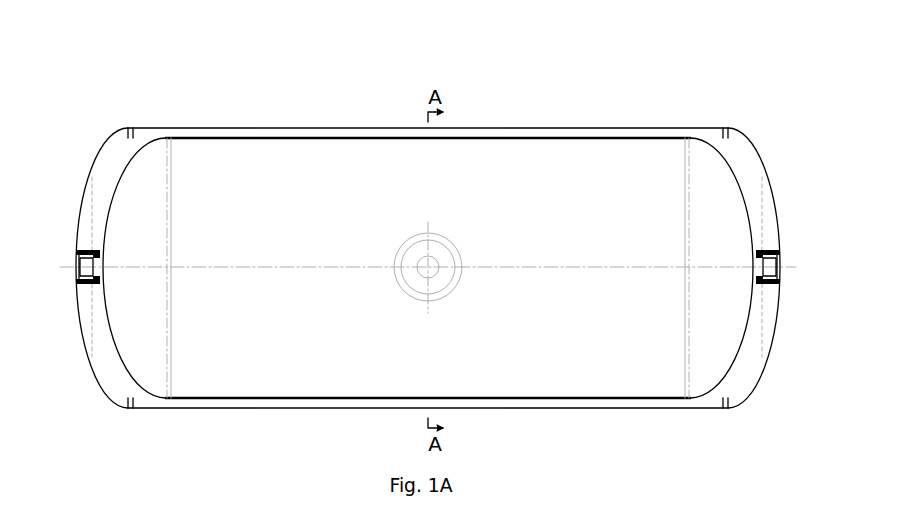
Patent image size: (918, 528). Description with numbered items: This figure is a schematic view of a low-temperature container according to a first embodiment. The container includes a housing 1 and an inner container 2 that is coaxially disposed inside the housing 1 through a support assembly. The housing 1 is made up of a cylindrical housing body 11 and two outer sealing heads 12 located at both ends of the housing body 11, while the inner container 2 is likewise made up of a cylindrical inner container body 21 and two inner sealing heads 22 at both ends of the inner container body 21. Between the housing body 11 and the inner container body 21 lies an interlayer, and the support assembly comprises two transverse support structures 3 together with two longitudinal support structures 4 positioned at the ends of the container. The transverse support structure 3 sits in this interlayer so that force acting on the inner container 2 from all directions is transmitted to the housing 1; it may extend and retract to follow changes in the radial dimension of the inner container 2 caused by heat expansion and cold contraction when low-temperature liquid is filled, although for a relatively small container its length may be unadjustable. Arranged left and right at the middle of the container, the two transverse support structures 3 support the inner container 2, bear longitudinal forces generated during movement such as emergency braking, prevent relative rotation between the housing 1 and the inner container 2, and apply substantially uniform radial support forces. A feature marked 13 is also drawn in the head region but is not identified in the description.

The housing 1 is at (147, 88).
The housing body 11 is at (313, 127).
The outer sealing head 12 is at (100, 150).
The neck portion 13 is at (90, 221).
The inner container 2 is at (704, 133).
The inner container body 21 is at (557, 137).
The inner sealing head 22 is at (118, 357).
The transverse support structure 3 is at (458, 233).
The longitudinal support structure 4 is at (63, 278).